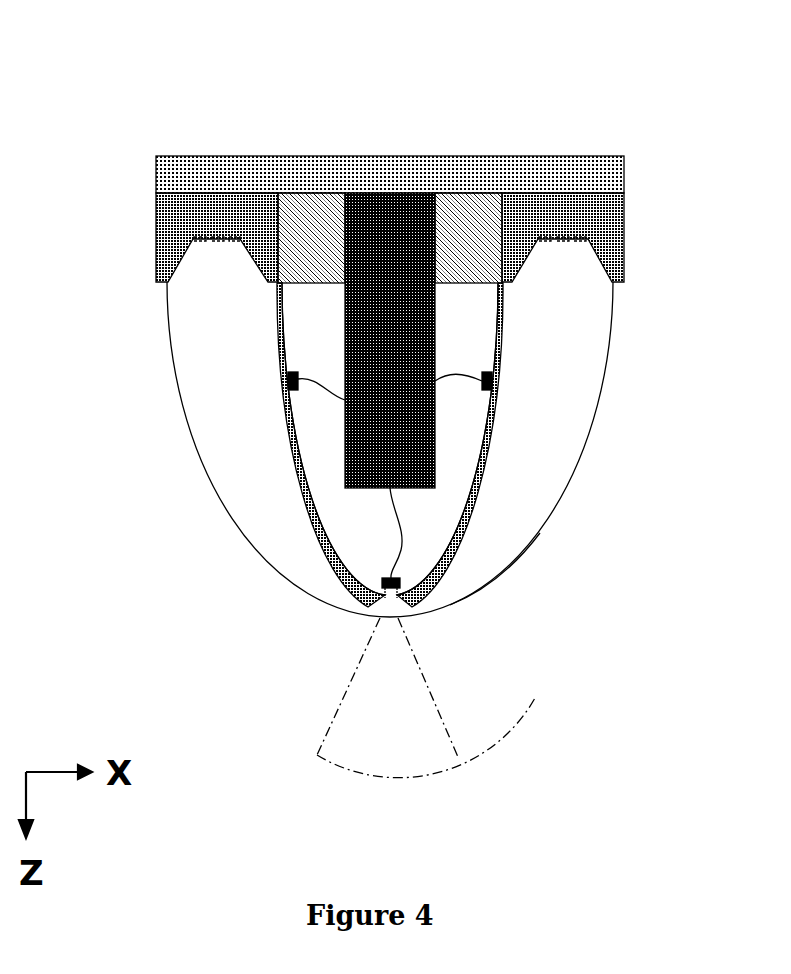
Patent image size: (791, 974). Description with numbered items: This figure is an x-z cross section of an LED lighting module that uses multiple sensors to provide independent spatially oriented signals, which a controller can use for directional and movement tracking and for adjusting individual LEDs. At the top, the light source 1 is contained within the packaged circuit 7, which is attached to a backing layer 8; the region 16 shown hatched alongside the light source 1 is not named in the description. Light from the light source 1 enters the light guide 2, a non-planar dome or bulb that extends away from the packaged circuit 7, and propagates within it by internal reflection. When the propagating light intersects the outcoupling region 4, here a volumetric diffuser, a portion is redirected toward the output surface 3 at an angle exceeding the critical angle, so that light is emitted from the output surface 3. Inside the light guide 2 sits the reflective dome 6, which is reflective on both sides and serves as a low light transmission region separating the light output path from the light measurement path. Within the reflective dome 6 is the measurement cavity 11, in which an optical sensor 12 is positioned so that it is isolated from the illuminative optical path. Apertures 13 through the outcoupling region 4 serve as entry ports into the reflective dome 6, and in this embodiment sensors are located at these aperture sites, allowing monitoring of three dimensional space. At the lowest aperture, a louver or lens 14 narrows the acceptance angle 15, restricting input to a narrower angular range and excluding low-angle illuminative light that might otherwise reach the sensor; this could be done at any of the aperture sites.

The light source 1 is at (560, 237).
The light guide 2 is at (570, 365).
The output surface 3 is at (492, 582).
The outcoupling region 4 is at (460, 543).
The reflective dome 6 is at (283, 347).
The packaged circuit 7 is at (593, 215).
The backing layer 8 is at (232, 175).
The measurement cavity 11 is at (460, 448).
The optical sensor 12 is at (385, 588).
The apertures 13 is at (288, 383).
The louver or lens 14 is at (386, 594).
The acceptance angle 15 is at (449, 698).
The insulation 16 is at (410, 280).